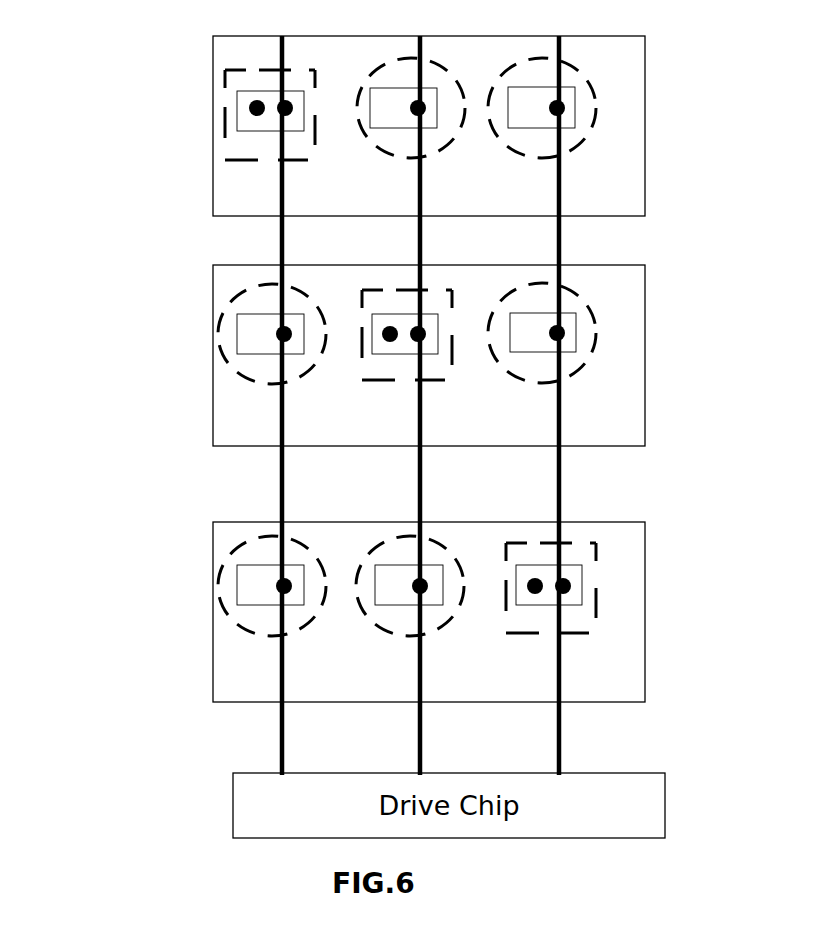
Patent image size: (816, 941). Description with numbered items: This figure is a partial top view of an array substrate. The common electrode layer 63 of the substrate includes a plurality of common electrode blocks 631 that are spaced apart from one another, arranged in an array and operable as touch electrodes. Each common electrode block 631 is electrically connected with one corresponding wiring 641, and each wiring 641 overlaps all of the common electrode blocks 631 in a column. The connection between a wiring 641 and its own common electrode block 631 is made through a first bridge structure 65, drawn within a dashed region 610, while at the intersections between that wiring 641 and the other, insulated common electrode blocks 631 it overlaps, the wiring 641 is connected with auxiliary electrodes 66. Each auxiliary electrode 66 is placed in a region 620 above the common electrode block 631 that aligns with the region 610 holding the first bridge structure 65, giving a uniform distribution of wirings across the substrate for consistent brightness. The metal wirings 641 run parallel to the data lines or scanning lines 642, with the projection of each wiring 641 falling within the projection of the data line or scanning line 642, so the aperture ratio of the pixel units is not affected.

The first bridge structure 65 is at (268, 92).
The auxiliary electrode 66 is at (356, 15).
The first pixel electrode region 610 is at (226, 90).
The region above the common electrode block 620 is at (503, 142).
The common electrode block 631 is at (346, 369).
The common electrode layer 63 is at (212, 196).
The wiring 641 is at (397, 405).
The data line or scanning line 642 is at (598, 243).